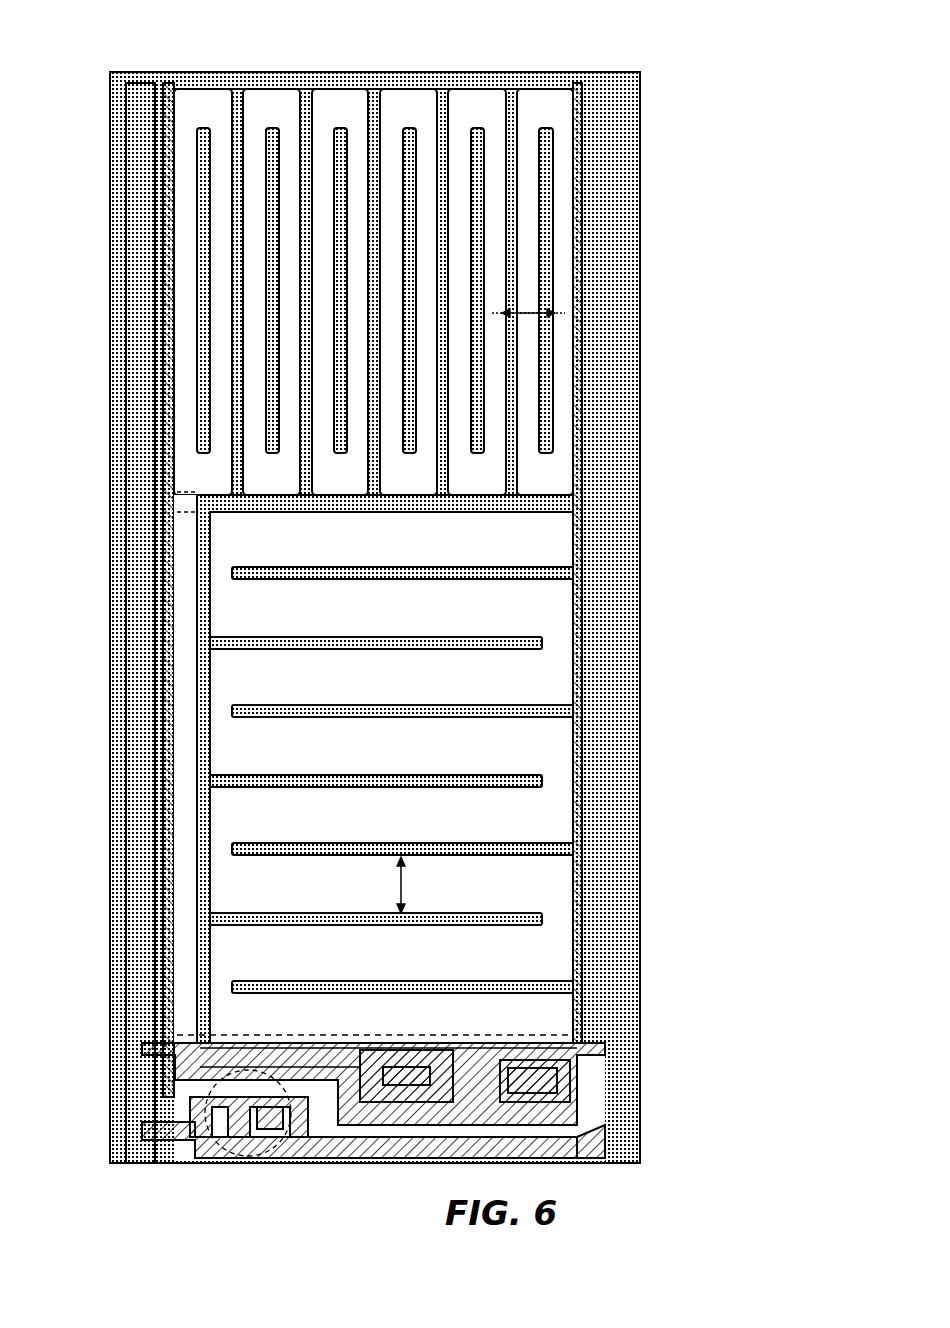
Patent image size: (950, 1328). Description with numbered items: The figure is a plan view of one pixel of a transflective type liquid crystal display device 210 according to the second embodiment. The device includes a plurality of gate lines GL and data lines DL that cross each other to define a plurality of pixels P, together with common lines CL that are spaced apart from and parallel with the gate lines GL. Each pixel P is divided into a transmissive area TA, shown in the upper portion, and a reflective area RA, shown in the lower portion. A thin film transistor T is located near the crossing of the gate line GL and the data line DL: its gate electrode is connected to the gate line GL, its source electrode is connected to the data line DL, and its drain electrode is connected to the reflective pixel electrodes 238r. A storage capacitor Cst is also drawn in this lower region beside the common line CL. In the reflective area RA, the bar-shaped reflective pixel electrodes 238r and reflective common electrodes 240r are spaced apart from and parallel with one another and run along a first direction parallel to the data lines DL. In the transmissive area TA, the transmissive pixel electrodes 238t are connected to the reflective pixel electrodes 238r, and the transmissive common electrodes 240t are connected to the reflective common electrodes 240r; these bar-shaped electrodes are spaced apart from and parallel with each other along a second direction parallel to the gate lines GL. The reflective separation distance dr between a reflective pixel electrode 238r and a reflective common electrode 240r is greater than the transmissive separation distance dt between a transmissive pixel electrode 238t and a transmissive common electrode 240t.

The transflective type liquid crystal display device 210 is at (587, 70).
The transmissive common electrode 240t is at (517, 210).
The transmissive pixel electrode 238t is at (553, 262).
The transmissive separation distance dt is at (528, 301).
The transmissive area TA is at (590, 330).
The pixel P is at (718, 340).
The reflective area RA is at (590, 600).
The reflective pixel electrode 238r is at (542, 770).
The reflective common electrode 240r is at (545, 838).
The reflective separation distance dr is at (413, 885).
The storage capacitor Cst is at (580, 1092).
The data line DL is at (110, 622).
The common line CL is at (143, 1048).
The thin film transistor T is at (130, 1090).
The gate line GL is at (130, 1135).